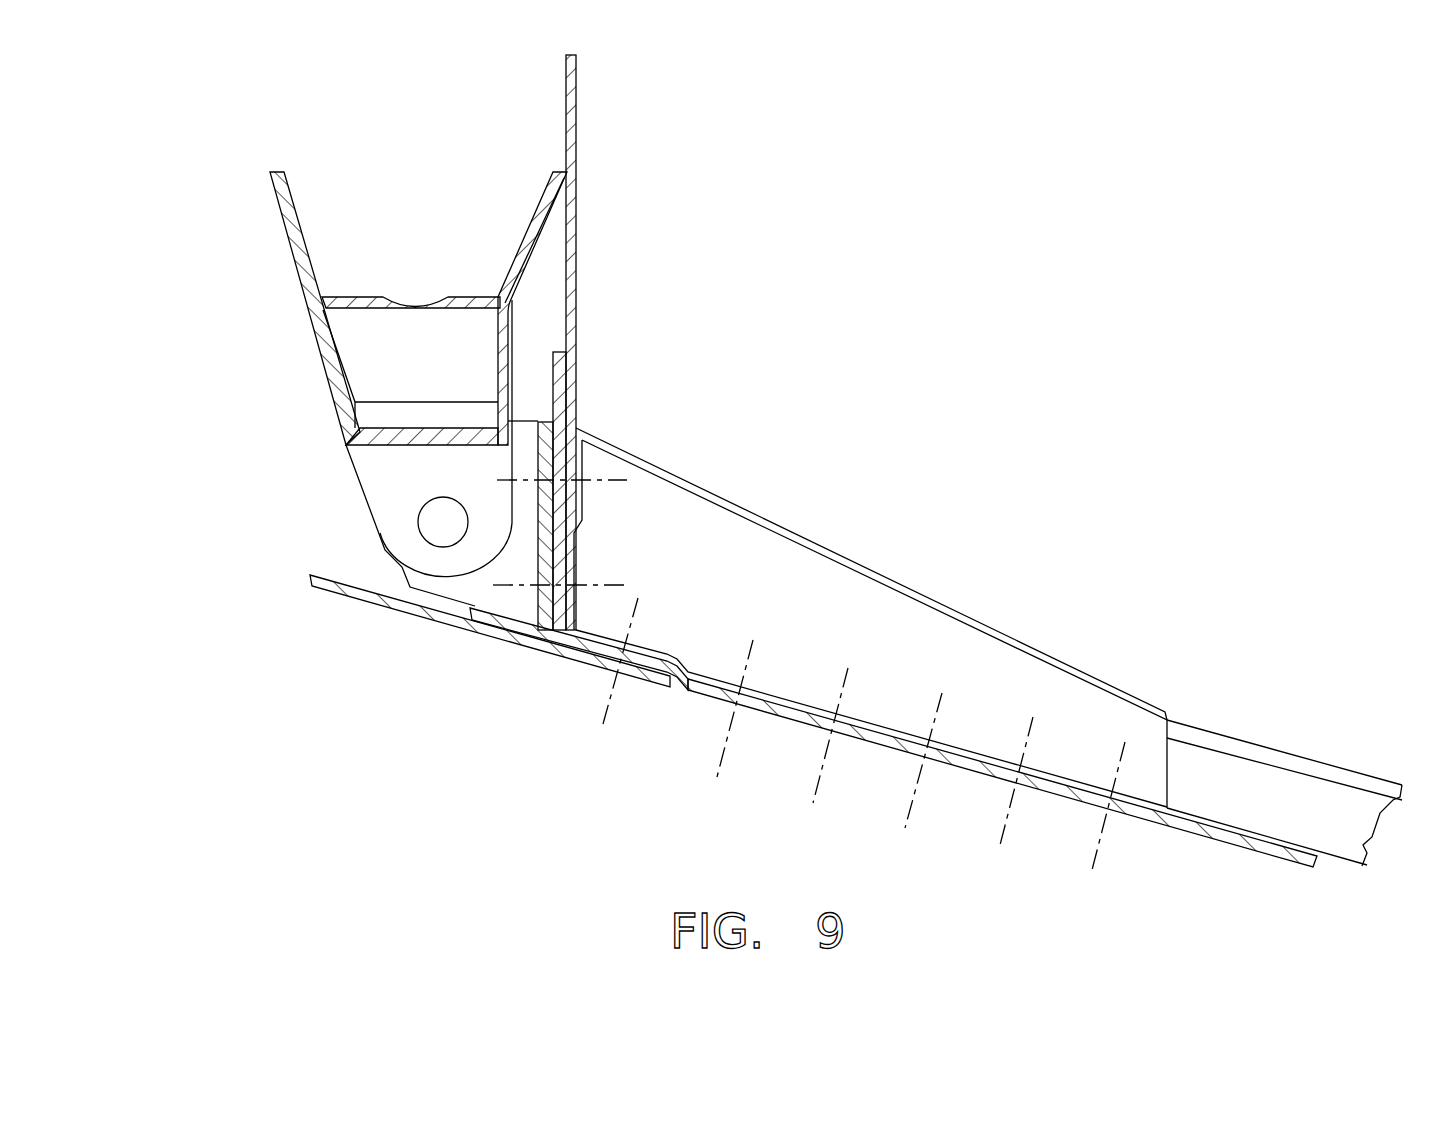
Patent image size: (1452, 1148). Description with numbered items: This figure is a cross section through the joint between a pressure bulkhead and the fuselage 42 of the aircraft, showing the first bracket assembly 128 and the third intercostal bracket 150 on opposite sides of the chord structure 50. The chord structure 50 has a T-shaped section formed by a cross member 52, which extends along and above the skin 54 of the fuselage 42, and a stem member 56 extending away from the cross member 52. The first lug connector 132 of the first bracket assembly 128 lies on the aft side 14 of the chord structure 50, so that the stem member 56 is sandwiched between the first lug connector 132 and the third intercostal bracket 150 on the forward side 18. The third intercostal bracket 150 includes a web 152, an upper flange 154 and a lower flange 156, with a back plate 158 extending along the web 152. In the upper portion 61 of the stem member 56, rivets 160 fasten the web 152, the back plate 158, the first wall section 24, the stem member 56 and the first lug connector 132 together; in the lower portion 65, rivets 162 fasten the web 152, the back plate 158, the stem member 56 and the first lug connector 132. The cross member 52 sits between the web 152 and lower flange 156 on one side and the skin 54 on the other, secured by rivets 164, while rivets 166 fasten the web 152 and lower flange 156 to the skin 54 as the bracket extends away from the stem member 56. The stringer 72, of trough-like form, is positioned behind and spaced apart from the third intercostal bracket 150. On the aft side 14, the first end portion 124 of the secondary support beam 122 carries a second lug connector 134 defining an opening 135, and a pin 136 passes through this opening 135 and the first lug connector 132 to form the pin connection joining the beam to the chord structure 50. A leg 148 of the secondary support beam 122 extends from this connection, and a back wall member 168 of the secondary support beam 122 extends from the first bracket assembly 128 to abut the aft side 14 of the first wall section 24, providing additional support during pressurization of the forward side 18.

The aft side 14 is at (240, 492).
The forward side 18 is at (986, 364).
The first wall section 24 is at (580, 111).
The fuselage 42 is at (1279, 882).
The chord structure 50 is at (546, 360).
The cross member 52 is at (617, 656).
The skin 54 is at (766, 718).
The stem member 56 is at (576, 427).
The upper portion 61 is at (556, 448).
The lower portion 65 is at (583, 568).
The stringer 72 is at (1264, 780).
The secondary support beam 122 is at (278, 264).
The first end portion 124 is at (310, 352).
The first bracket assembly 128 is at (380, 473).
The first lug connector 132 is at (433, 618).
The second lug connector 134 is at (388, 491).
The opening 135 is at (430, 543).
The pin 136 is at (440, 523).
The leg 148 is at (278, 210).
The third intercostal bracket 150 is at (955, 588).
The web 152 is at (847, 633).
The upper flange 154 is at (778, 527).
The lower flange 156 is at (893, 738).
The back plate 158 is at (582, 503).
The rivets 160 is at (620, 478).
The rivets 162 is at (627, 585).
The rivets 164 is at (603, 722).
The rivets 166 is at (716, 775).
The back wall member 168 is at (542, 208).